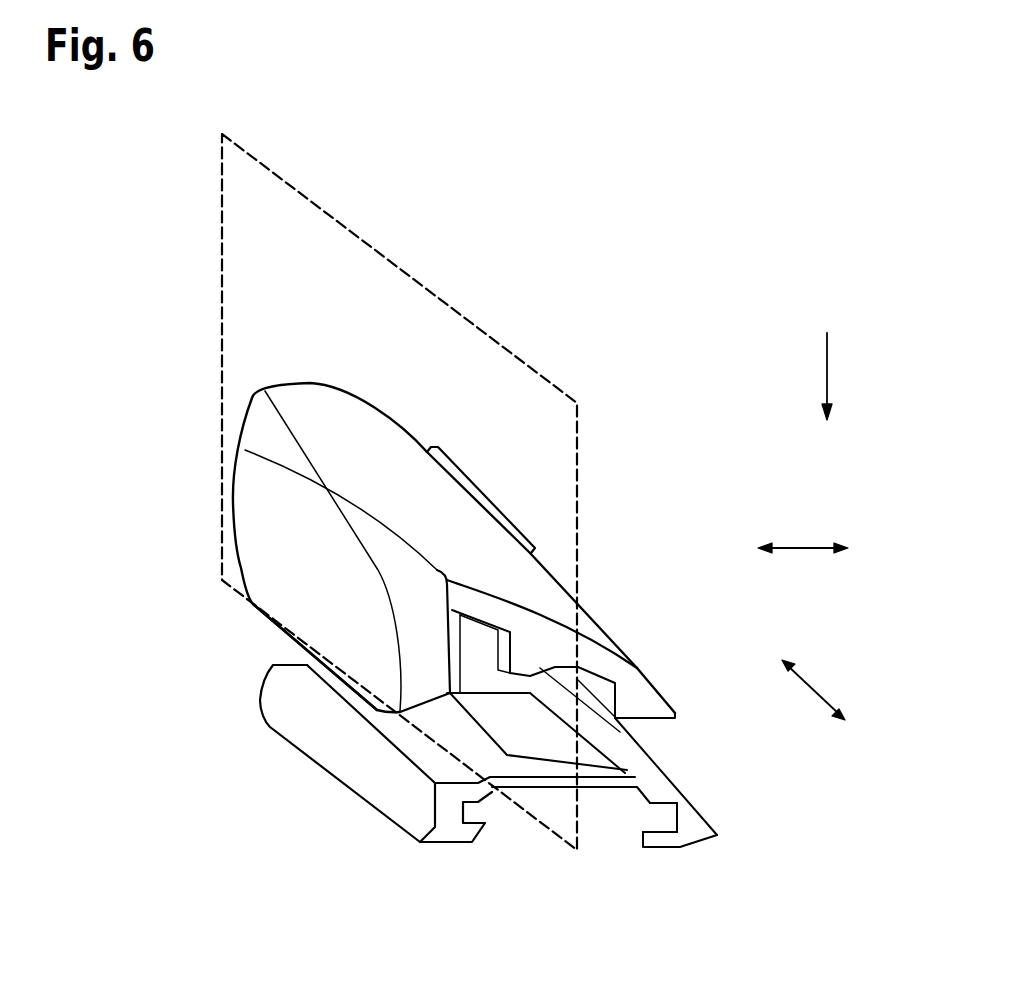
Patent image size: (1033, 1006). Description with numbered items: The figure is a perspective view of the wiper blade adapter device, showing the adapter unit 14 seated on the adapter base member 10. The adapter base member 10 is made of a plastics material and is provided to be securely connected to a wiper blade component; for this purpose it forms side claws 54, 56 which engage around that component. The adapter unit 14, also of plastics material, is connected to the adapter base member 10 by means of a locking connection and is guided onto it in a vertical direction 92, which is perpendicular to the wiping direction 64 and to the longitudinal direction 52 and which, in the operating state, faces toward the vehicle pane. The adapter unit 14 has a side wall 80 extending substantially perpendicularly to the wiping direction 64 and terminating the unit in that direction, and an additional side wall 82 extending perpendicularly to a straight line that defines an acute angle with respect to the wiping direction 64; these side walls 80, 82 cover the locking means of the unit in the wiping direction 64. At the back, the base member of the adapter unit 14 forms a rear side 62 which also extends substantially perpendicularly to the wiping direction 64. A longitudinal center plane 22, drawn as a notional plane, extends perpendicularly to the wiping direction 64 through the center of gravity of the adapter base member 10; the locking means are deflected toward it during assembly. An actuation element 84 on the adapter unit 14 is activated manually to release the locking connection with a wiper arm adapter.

The adapter base member 10 is at (546, 747).
The adapter unit 14 is at (202, 448).
The longitudinal center plane 22 is at (581, 443).
The longitudinal direction 52 is at (818, 690).
The side claw 54 is at (678, 818).
The side claw 56 is at (387, 793).
The rear side 62 is at (291, 604).
The wiping direction 64 is at (806, 548).
The side wall 80 is at (268, 560).
The additional side wall 82 is at (637, 668).
The actuation element 84 is at (492, 497).
The vertical direction 92 is at (827, 363).